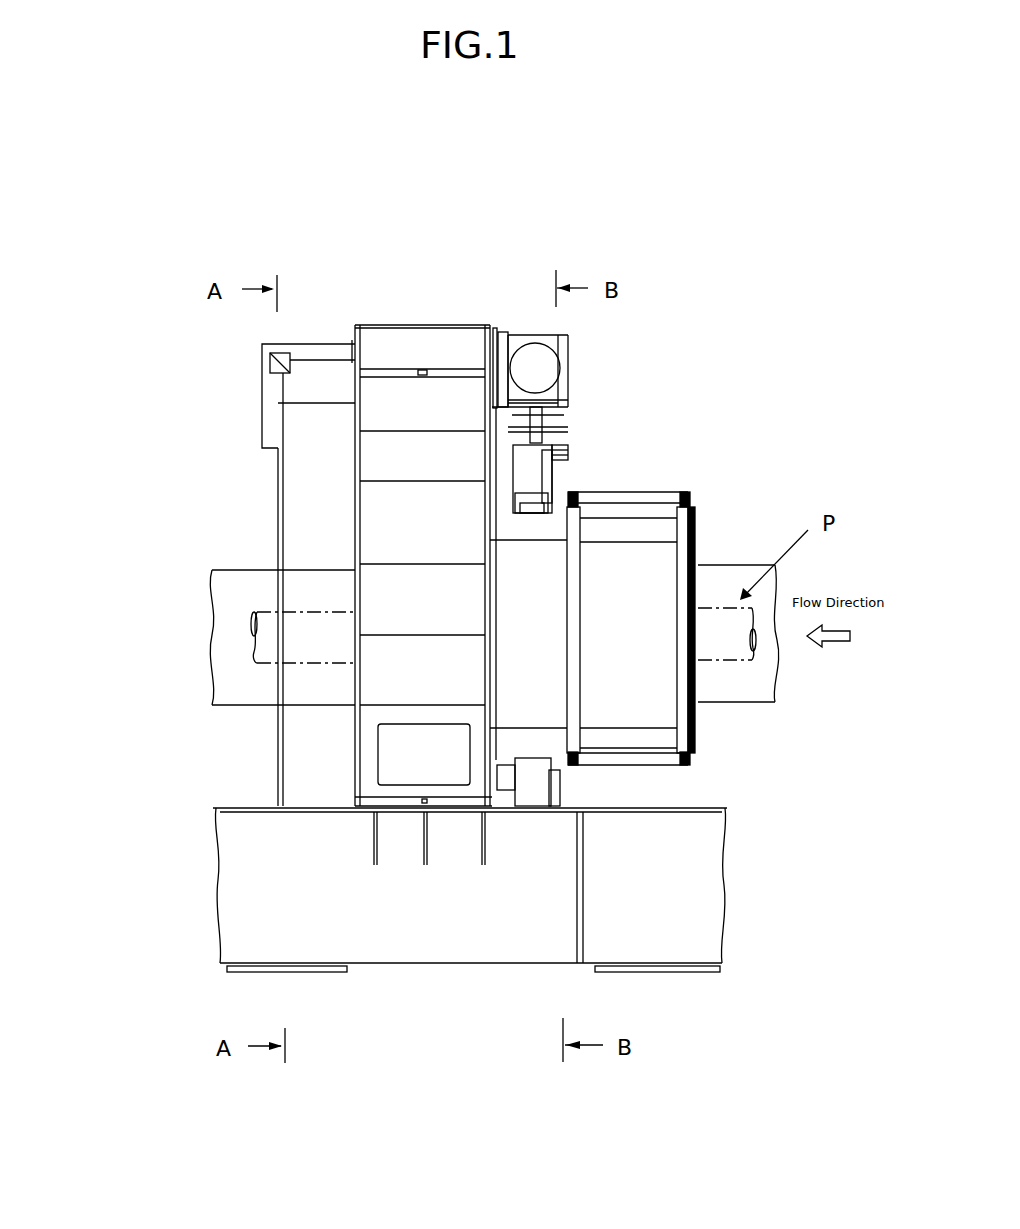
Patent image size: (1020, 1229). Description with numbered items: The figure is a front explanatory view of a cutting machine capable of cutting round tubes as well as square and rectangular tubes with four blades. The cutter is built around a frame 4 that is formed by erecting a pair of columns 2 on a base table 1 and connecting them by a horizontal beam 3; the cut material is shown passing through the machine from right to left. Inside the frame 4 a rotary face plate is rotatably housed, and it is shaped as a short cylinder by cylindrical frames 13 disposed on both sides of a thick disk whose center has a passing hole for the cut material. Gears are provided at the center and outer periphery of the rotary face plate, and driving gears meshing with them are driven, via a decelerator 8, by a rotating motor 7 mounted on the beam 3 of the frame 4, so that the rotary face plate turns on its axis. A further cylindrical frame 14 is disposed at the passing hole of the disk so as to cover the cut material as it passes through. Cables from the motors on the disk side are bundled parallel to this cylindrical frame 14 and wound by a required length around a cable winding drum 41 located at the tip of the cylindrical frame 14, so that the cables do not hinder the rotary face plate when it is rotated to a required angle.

The base table 1 is at (232, 862).
The column 2 is at (375, 393).
The horizontal beam 3 is at (437, 328).
The frame 4 is at (366, 316).
The rotating motor 7 is at (532, 348).
The decelerator 8 is at (568, 435).
The cylindrical frame 13 is at (303, 507).
The cylindrical frame 14 is at (537, 548).
The cable winding drum 41 is at (683, 527).